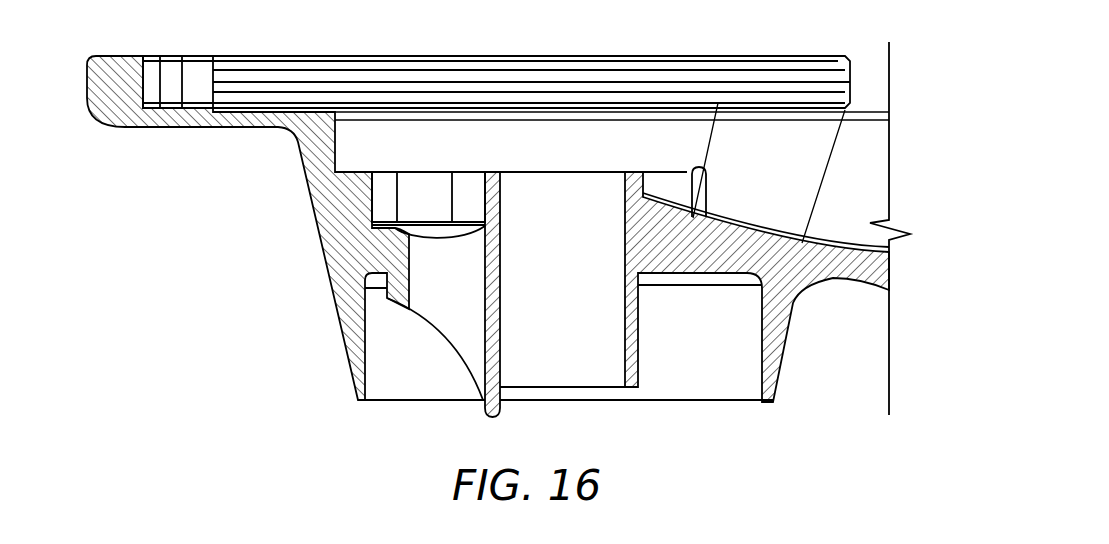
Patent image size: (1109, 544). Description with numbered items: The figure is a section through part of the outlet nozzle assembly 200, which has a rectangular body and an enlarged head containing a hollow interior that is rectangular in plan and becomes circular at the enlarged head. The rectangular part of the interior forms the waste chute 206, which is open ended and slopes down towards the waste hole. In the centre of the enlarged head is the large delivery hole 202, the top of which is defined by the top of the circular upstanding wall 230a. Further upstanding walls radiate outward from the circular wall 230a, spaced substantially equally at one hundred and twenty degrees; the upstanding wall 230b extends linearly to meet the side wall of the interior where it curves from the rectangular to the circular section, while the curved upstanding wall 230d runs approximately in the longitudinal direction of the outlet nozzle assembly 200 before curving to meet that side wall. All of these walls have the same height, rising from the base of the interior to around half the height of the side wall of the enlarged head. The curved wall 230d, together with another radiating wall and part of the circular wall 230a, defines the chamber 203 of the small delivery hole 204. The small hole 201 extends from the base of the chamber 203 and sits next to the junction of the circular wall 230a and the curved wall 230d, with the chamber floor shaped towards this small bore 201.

The outlet nozzle assembly 200 is at (268, 346).
The small hole 201 is at (430, 310).
The large delivery hole 202 is at (557, 377).
The chamber 203 is at (394, 160).
The small delivery hole 204 is at (447, 372).
The waste chute 206 is at (870, 158).
The circular upstanding wall 230a is at (500, 187).
The upstanding wall 230b is at (706, 171).
The curved upstanding wall 230d is at (442, 187).